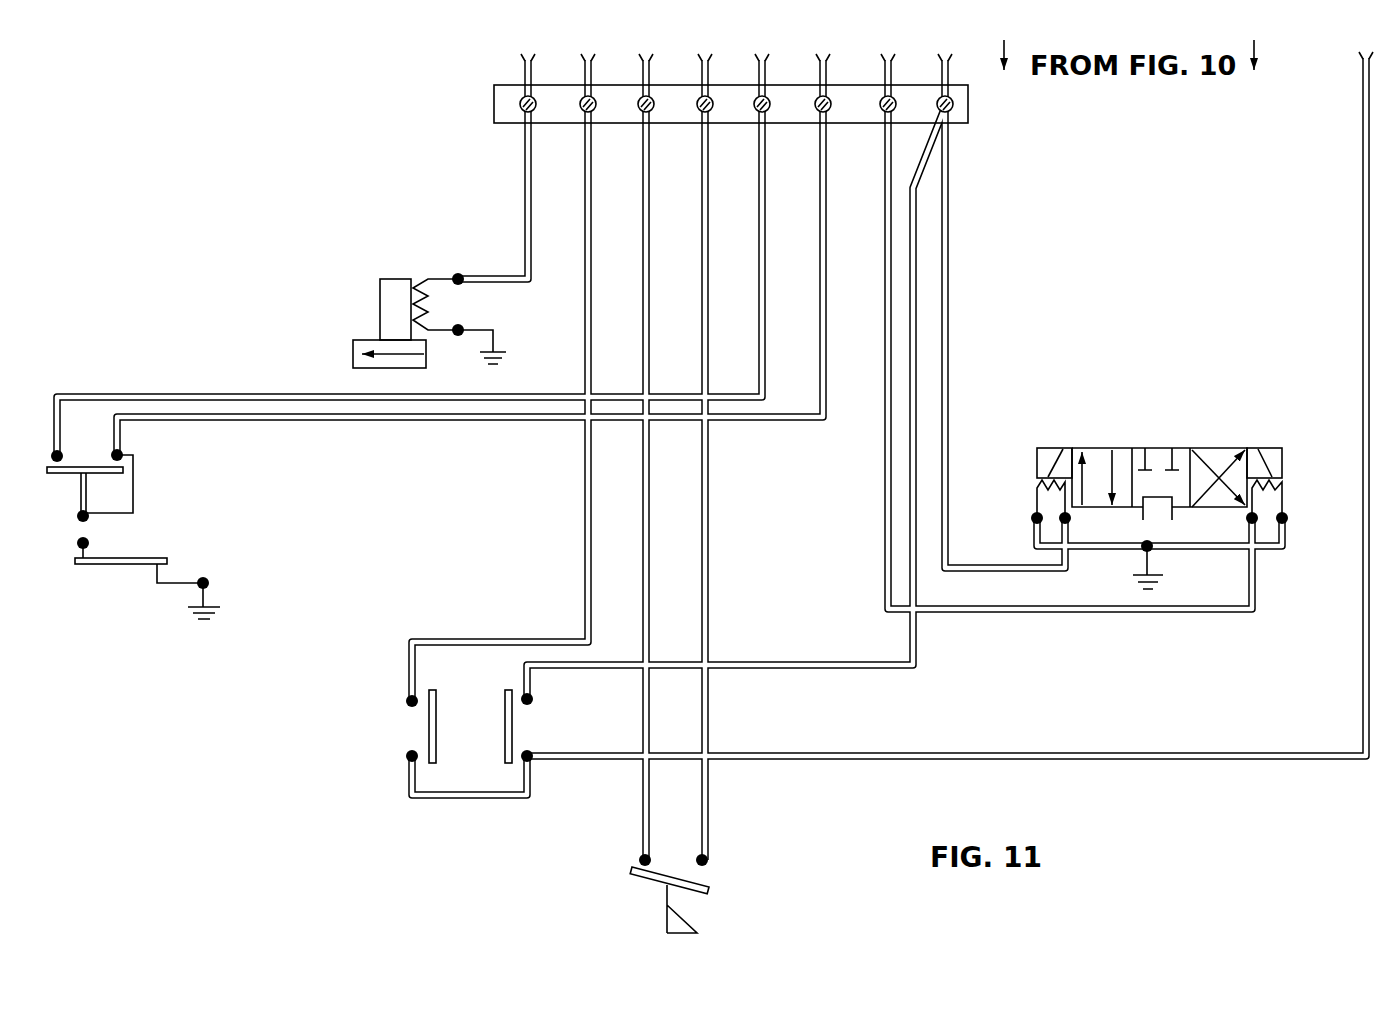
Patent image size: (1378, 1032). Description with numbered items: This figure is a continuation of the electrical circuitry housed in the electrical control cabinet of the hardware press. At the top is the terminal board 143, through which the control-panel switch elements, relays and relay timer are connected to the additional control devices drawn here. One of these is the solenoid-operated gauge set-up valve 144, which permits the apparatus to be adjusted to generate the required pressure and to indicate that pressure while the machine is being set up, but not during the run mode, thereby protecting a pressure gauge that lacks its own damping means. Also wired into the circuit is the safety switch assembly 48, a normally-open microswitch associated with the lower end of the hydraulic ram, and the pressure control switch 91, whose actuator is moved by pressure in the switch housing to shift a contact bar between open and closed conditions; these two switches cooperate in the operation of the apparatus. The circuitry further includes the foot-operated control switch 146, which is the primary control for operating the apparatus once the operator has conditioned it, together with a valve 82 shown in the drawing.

The terminal board 143 is at (507, 102).
The solenoid-operated gauge set-up valve 144 is at (372, 322).
The safety switch assembly 48 is at (142, 482).
The solenoid valve 82 is at (1184, 445).
The foot-operated control switch 146 is at (481, 698).
The pressure control switch 91 is at (673, 866).